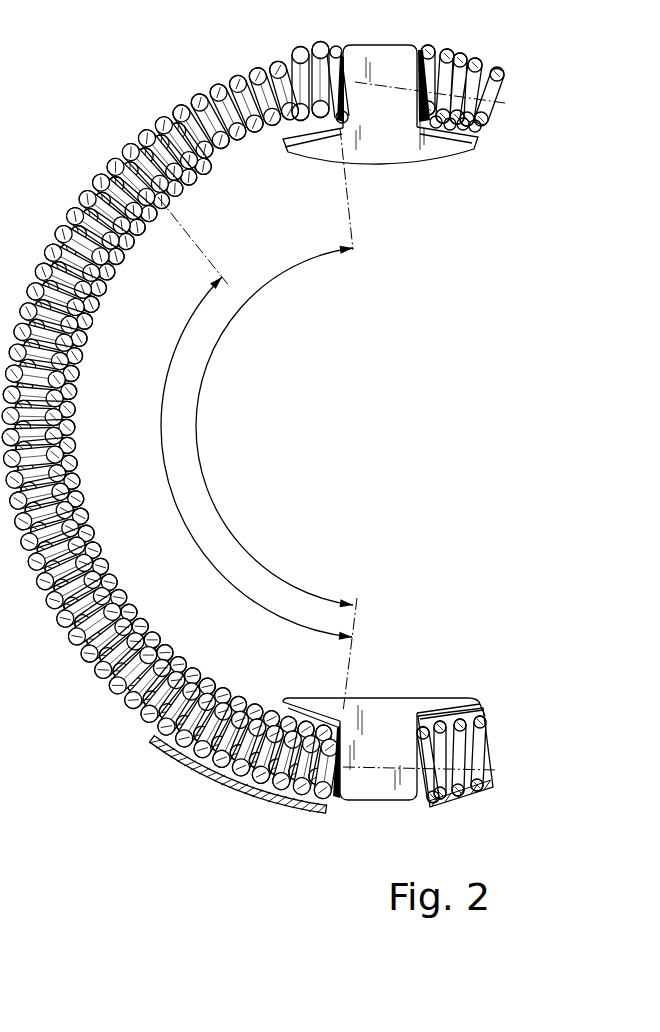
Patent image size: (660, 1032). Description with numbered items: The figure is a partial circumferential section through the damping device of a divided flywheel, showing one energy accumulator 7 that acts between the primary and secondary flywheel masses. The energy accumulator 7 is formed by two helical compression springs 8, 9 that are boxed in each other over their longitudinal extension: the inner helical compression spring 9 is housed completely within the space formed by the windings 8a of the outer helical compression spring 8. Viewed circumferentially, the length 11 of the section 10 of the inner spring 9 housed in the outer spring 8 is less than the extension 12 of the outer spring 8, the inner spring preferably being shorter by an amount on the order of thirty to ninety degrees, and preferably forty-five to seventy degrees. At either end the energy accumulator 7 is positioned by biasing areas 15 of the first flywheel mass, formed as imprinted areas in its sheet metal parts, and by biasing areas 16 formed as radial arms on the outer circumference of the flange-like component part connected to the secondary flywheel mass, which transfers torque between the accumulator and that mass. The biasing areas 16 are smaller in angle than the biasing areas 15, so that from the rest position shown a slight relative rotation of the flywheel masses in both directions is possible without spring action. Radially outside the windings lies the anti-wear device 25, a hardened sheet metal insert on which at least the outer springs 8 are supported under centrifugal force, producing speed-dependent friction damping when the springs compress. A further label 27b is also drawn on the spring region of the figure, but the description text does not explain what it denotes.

The energy accumulator 7 is at (70, 662).
The helical compression spring 8 is at (152, 643).
The windings 8a is at (117, 602).
The helical compression spring 9 is at (55, 233).
The section 10 is at (68, 450).
The length 11 is at (162, 494).
The extension 12 is at (198, 448).
The biasing area 15 is at (345, 62).
The biasing area 16 is at (392, 57).
The anti-wear device 25 is at (233, 790).
The roller 27b is at (70, 378).